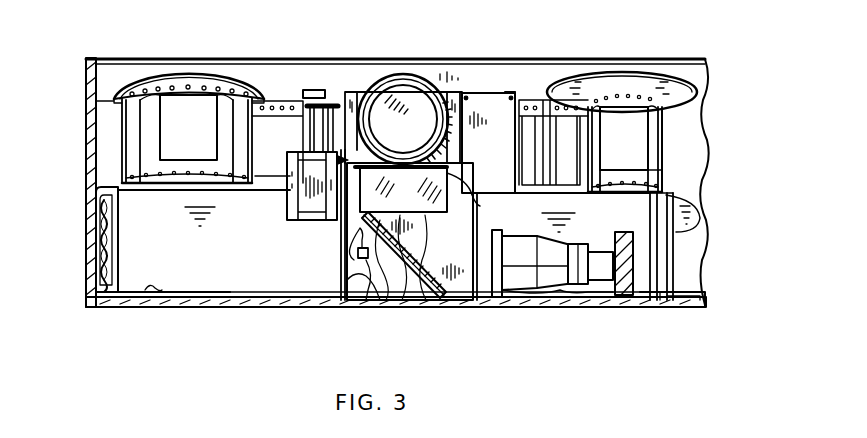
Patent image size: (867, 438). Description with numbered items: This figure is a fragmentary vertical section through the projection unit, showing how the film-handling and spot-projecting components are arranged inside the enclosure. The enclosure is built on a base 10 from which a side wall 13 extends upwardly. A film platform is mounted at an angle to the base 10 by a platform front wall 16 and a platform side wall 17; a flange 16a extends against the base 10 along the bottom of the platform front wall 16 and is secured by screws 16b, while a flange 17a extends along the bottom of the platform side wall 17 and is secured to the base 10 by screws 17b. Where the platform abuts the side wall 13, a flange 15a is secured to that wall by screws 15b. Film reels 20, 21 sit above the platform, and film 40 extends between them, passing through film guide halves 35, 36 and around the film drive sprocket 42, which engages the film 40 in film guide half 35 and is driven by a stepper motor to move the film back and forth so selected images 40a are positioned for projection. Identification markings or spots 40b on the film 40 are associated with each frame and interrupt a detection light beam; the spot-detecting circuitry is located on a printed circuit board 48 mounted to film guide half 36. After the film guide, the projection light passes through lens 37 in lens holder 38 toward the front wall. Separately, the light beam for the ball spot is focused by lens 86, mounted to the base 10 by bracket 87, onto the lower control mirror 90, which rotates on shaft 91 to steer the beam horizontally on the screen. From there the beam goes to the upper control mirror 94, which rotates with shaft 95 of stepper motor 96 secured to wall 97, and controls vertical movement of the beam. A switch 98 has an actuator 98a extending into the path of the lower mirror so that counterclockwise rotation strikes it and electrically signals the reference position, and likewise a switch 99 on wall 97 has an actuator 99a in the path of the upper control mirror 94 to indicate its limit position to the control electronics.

The base 10 is at (270, 307).
The side wall 13 is at (88, 123).
The flange 15a is at (92, 187).
The screws 15b is at (88, 242).
The platform front wall 16 is at (85, 281).
The flange 16a is at (190, 307).
The screws 16b is at (123, 307).
The platform side wall 17 is at (675, 258).
The flange 17a is at (672, 308).
The screws 17b is at (700, 302).
The film reel 20 is at (174, 62).
The film reel 21 is at (648, 73).
The film guide half 35 is at (314, 90).
The film guide half 36 is at (358, 94).
The lens 37 is at (404, 76).
The lens holder 38 is at (453, 112).
The film 40 is at (522, 103).
The images 40a is at (640, 128).
The identification markings or spots 40b is at (660, 172).
The film drive sprocket 42 is at (336, 100).
The printed circuit board 48 is at (490, 103).
The lens 86 is at (546, 300).
The bracket 87 is at (616, 308).
The lower control mirror 90 is at (432, 308).
The shaft 91 is at (403, 307).
The upper control mirror 94 is at (432, 213).
The shaft 95 is at (343, 238).
The stepper motor 96 is at (290, 208).
The wall 97 is at (344, 278).
The switch 98 is at (364, 307).
The actuator 98a is at (360, 246).
The switch 99 is at (396, 218).
The actuator 99a is at (483, 198).